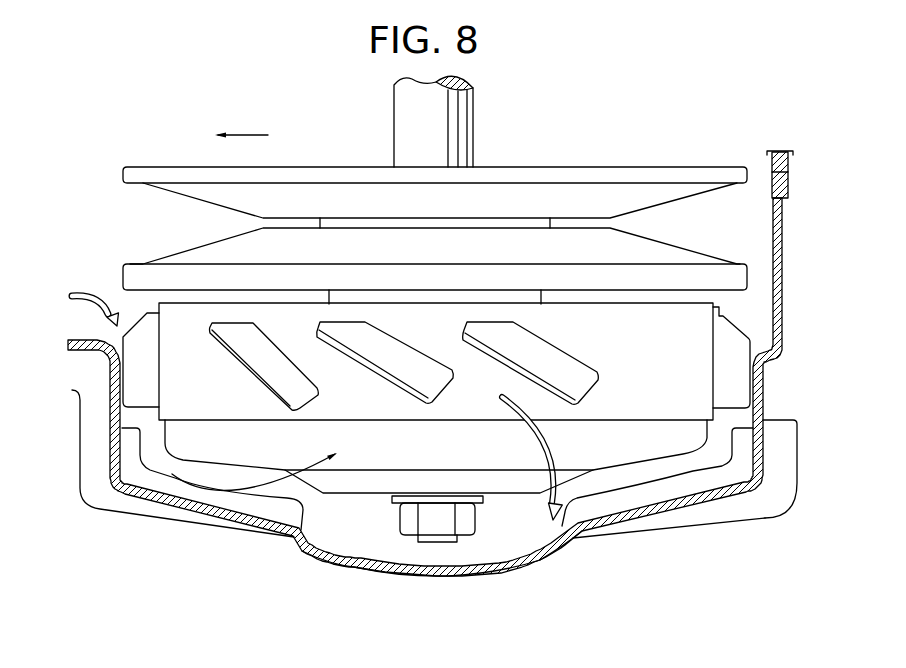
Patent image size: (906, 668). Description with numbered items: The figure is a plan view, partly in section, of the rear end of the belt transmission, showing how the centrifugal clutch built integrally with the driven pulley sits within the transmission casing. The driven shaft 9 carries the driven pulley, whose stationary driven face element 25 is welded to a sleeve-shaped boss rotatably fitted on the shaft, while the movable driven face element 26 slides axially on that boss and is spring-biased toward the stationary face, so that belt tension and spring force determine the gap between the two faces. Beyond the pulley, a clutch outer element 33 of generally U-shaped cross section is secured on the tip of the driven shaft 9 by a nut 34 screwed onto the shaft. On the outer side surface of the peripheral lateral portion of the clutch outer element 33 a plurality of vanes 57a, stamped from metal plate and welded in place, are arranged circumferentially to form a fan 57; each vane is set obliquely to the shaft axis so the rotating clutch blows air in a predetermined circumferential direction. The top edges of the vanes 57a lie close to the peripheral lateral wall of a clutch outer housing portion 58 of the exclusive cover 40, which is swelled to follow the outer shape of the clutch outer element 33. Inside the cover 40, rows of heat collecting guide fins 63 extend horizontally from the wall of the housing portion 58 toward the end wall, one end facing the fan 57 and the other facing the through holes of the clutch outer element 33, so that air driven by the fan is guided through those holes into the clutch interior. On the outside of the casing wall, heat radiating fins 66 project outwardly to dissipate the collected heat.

The driven shaft 9 is at (394, 121).
The stationary driven face element 25 is at (720, 173).
The movable driven face element 26 is at (728, 273).
The fan 57 is at (520, 376).
The vanes 57a is at (252, 377).
The clutch outer element 33 is at (672, 450).
The nut 34 is at (412, 528).
The exclusive cover 40 is at (520, 567).
The clutch outer housing portion 58 is at (345, 560).
The heat collecting guide fins 63 is at (160, 478).
The heat radiating fins 66 is at (780, 475).